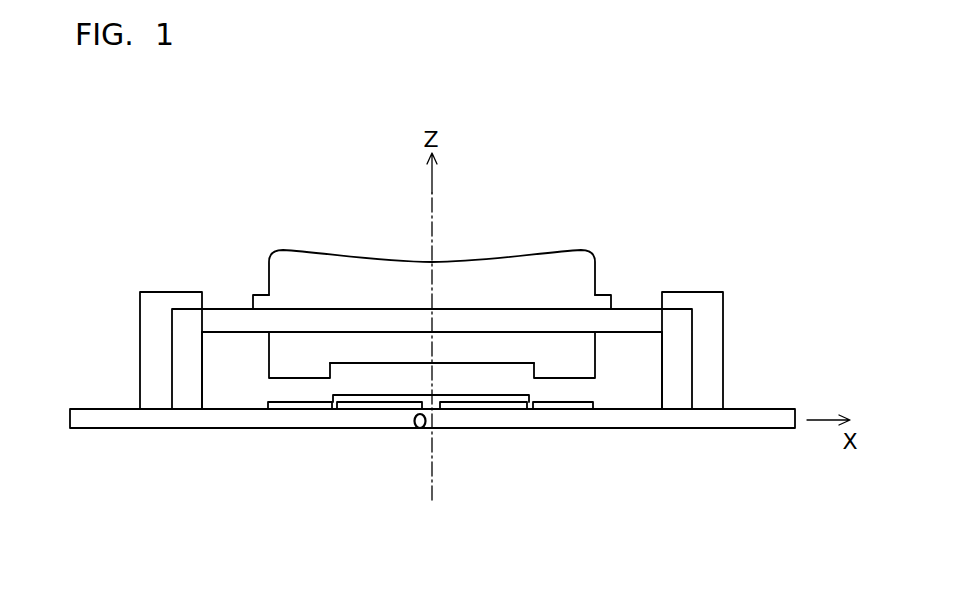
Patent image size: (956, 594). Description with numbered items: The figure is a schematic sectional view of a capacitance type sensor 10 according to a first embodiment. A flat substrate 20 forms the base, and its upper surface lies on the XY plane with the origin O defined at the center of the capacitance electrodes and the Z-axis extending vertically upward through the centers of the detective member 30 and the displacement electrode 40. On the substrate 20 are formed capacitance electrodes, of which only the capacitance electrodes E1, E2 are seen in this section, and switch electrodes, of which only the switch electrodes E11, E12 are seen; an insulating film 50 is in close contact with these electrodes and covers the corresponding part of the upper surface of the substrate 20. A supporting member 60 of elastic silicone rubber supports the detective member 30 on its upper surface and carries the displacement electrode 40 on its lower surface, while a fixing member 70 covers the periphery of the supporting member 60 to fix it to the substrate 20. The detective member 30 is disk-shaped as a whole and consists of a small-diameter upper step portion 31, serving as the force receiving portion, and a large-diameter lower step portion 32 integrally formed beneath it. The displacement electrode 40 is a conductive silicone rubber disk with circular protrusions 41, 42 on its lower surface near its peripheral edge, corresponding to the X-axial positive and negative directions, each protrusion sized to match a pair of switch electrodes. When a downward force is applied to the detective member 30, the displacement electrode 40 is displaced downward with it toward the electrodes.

The capacitance type sensor 10 is at (624, 194).
The substrate 20 is at (118, 415).
The detective member 30 is at (188, 180).
The upper step portion 31 is at (295, 265).
The lower step portion 32 is at (260, 295).
The displacement electrode 40 is at (283, 355).
The protrusion 41 is at (565, 370).
The protrusion 42 is at (300, 367).
The insulating film 50 is at (333, 395).
The supporting member 60 is at (213, 318).
The fixing member 70 is at (710, 310).
The capacitance electrode E1 is at (498, 406).
The switch electrode E11 is at (563, 406).
The capacitance electrode E2 is at (375, 406).
The switch electrode E12 is at (298, 406).